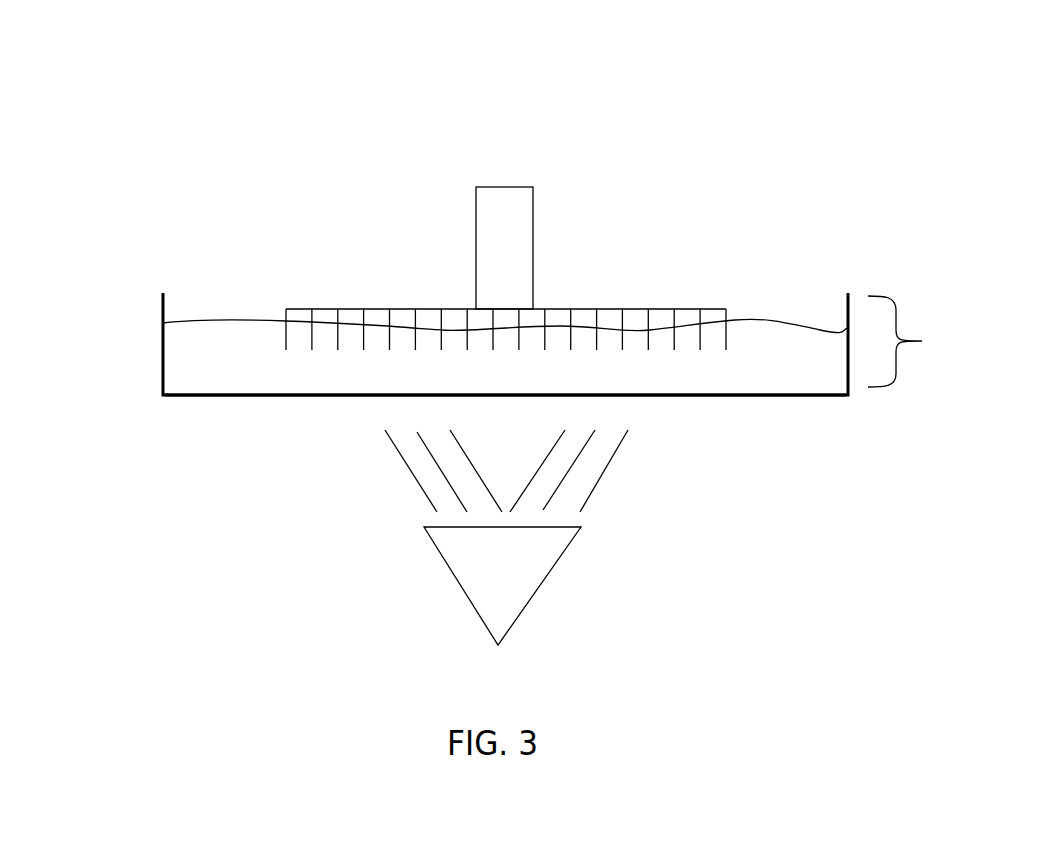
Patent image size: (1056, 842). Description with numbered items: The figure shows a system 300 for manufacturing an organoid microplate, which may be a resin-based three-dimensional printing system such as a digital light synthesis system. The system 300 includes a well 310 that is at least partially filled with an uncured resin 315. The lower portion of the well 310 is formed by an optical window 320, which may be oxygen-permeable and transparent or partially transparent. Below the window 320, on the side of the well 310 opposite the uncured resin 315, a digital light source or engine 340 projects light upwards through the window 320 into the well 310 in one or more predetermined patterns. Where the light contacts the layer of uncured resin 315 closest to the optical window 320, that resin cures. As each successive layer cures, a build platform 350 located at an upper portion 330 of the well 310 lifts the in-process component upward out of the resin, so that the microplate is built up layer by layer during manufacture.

The system 300 is at (895, 123).
The well 310 is at (509, 412).
The uncured resin 315 is at (174, 349).
The optical window 320 is at (282, 402).
The upper portion 330 is at (650, 289).
The digital light source or engine 340 is at (477, 606).
The build platform 350 is at (464, 190).